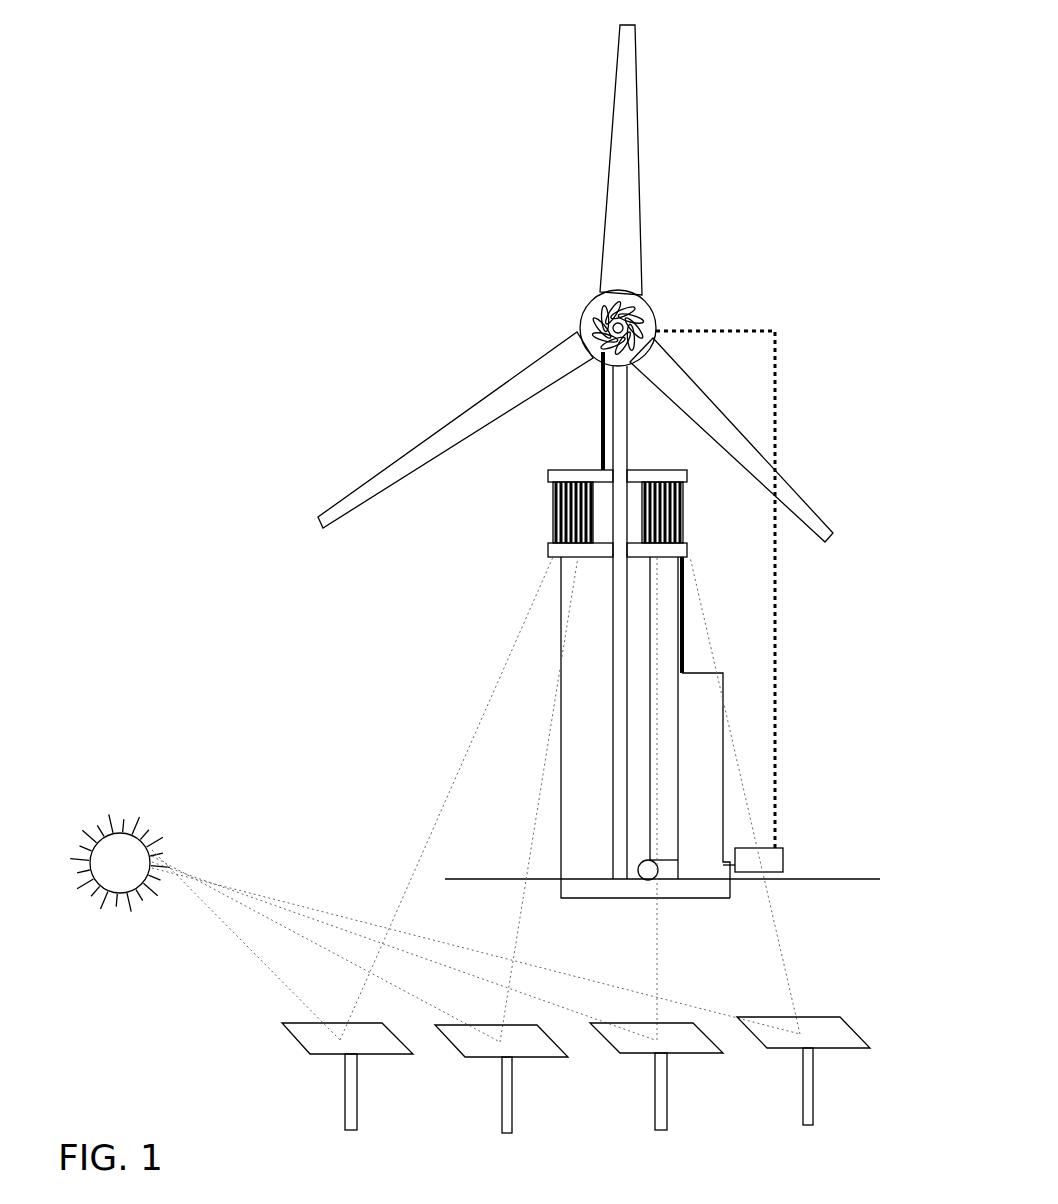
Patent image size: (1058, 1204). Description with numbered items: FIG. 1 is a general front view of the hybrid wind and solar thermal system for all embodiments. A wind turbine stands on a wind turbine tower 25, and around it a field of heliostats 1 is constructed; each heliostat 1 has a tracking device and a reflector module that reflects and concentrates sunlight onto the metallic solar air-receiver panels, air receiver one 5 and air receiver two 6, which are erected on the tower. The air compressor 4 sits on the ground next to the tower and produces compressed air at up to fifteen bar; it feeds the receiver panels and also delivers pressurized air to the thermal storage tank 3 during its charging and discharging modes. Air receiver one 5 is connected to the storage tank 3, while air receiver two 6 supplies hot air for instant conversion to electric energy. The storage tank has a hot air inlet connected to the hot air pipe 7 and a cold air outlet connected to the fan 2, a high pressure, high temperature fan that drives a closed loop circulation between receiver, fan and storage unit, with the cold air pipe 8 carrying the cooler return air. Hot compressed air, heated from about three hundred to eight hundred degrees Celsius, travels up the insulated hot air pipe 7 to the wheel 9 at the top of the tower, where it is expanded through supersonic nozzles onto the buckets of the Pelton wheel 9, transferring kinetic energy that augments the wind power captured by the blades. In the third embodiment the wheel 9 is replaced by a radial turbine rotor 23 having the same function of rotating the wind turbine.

The heliostat 1 is at (310, 1055).
The fan 2 is at (642, 878).
The storage tank 3 is at (723, 715).
The compressor 4 is at (783, 848).
The air receiver one 5 is at (553, 512).
The air receiver two 6 is at (683, 512).
The hot air pipe 7 is at (600, 423).
The cold air pipe 8 is at (650, 613).
The wheel 9 is at (587, 323).
The radial turbine rotor 23 is at (600, 318).
The wind turbine tower 25 is at (627, 760).